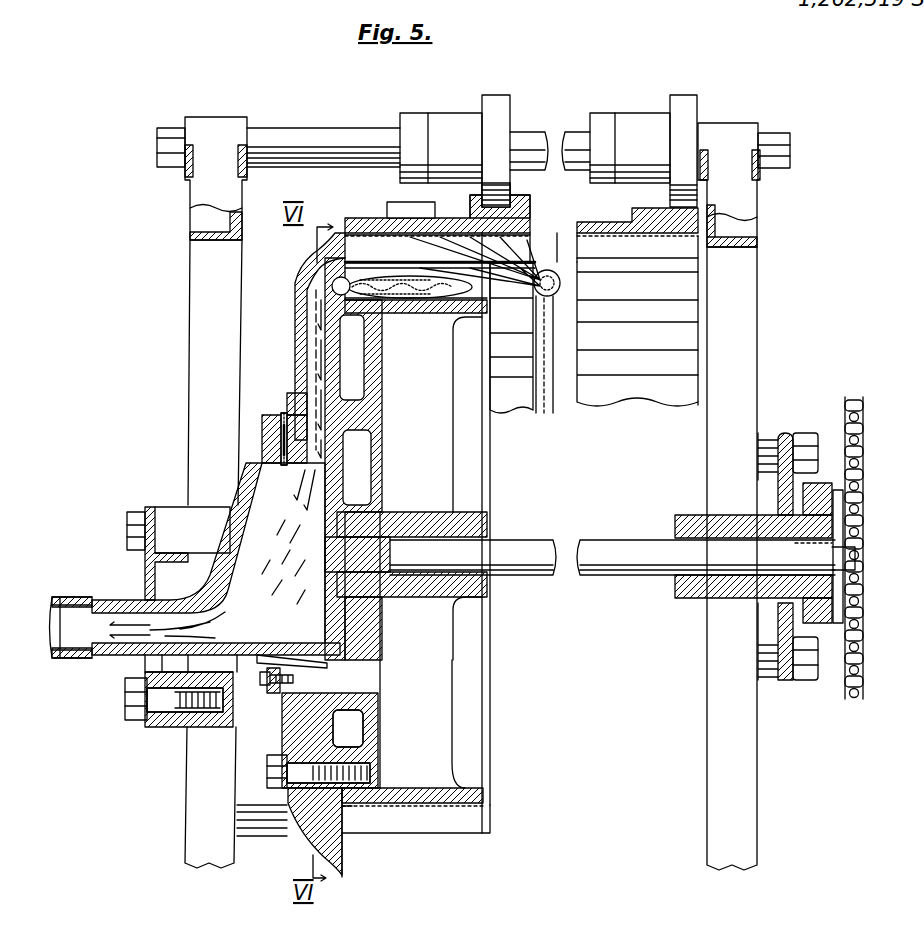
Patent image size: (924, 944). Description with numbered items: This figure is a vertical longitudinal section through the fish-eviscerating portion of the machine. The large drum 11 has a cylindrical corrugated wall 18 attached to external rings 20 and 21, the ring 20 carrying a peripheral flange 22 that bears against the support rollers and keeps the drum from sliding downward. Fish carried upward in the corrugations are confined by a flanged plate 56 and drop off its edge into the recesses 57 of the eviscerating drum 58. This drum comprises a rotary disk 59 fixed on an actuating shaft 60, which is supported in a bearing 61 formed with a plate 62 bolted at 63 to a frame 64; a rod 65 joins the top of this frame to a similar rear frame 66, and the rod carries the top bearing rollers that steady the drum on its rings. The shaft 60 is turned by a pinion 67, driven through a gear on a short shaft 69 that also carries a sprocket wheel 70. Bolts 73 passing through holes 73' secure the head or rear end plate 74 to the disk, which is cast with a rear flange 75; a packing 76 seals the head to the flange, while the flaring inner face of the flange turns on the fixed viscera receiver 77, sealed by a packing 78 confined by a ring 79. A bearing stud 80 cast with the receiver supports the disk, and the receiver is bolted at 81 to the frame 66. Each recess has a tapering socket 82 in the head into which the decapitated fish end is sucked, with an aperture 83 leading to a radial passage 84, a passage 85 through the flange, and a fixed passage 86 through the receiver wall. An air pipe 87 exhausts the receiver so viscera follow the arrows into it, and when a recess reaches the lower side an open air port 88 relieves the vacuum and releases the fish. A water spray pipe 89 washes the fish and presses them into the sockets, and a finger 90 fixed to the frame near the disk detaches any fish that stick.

The drum 11 is at (680, 380).
The cylindrical corrugated wall 18 is at (618, 370).
The external ring 20 is at (530, 225).
The external ring 21 is at (712, 212).
The peripheral flange 22 is at (522, 200).
The flanged plate 56 is at (368, 250).
The recesses or concave corrugations 57 is at (440, 303).
The eviscerating carrier or drum 58 is at (486, 533).
The rotary spider or disk 59 is at (426, 704).
The actuating shaft 60 is at (605, 548).
The bearing 61 is at (690, 600).
The plate 62 is at (782, 490).
The bolt 63 is at (805, 433).
The frame 64 is at (740, 328).
The rod 65 is at (312, 134).
The frame 66 is at (188, 297).
The pinion 67 is at (830, 650).
The short shaft 69 is at (848, 550).
The sprocket wheel 70 is at (852, 700).
The bolts 73 is at (307, 764).
The holes 73' is at (293, 831).
The head or rear end plate 74 is at (296, 310).
The rear flange 75 is at (285, 428).
The packing 76 is at (295, 395).
The viscera receiver 77 is at (222, 530).
The packing 78 is at (284, 425).
The ring 79 is at (281, 447).
The bearing stud 80 is at (370, 545).
The bolt 81 is at (125, 700).
The socket 82 is at (318, 258).
The aperture 83 is at (332, 280).
The radial passage 84 is at (310, 362).
The passage 85 is at (325, 418).
The passage 86 is at (300, 472).
The air pipe or hose 87 is at (78, 596).
The open air port 88 is at (268, 660).
The water spray pipe 89 is at (560, 290).
The detaching means 90 is at (348, 830).